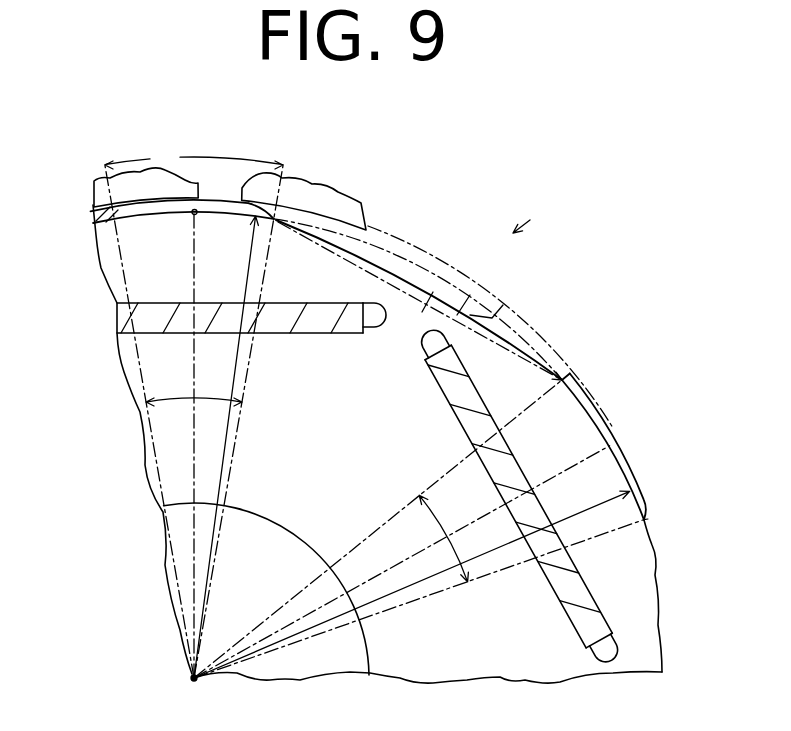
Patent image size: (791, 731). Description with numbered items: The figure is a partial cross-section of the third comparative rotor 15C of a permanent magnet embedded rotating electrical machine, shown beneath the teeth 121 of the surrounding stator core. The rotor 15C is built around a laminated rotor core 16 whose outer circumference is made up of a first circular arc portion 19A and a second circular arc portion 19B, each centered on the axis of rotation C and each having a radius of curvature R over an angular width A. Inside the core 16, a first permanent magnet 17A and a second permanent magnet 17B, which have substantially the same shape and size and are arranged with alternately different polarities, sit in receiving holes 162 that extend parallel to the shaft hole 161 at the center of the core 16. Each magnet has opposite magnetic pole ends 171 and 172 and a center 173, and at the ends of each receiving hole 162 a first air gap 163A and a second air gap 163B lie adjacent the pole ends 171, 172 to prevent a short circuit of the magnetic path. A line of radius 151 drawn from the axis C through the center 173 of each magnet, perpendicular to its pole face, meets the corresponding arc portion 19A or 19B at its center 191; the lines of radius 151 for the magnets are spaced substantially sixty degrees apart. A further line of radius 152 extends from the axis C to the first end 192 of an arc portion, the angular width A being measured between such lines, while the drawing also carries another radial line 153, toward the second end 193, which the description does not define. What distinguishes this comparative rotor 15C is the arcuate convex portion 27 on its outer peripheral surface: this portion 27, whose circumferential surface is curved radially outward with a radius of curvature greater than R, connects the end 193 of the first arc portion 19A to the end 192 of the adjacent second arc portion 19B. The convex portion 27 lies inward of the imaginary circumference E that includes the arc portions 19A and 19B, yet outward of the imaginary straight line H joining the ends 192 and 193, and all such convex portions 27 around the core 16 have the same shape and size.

The teeth 121 is at (137, 183).
The third comparative rotor 15C is at (540, 216).
The rotor core 16 is at (104, 250).
The first circular arc portion 19A is at (619, 439).
The second circular arc portion 19B is at (202, 200).
The center of circular arc portion 191 is at (192, 215).
The first end of circular arc portion 192 is at (283, 217).
The second end of circular arc portion 193 is at (116, 210).
The arcuate convex portion 27 is at (108, 214).
The first permanent magnet 17A is at (462, 424).
The second permanent magnet 17B is at (343, 333).
The magnetic pole end 171 is at (455, 347).
The magnetic pole end 172 is at (362, 303).
The center of permanent magnet 173 is at (195, 303).
The receiving hole 162 is at (293, 333).
The first air gap 163A is at (430, 356).
The second air gap 163B is at (378, 328).
The line of radius 151 is at (194, 336).
The line of radius 152 is at (236, 457).
The pole boundary line 153 is at (162, 470).
The shaft hole 161 is at (272, 530).
The imaginary line H is at (432, 294).
The imaginary circumference E is at (508, 302).
The angular width A is at (307, 483).
The radius of curvature R is at (412, 447).
The axis of rotation C is at (192, 679).